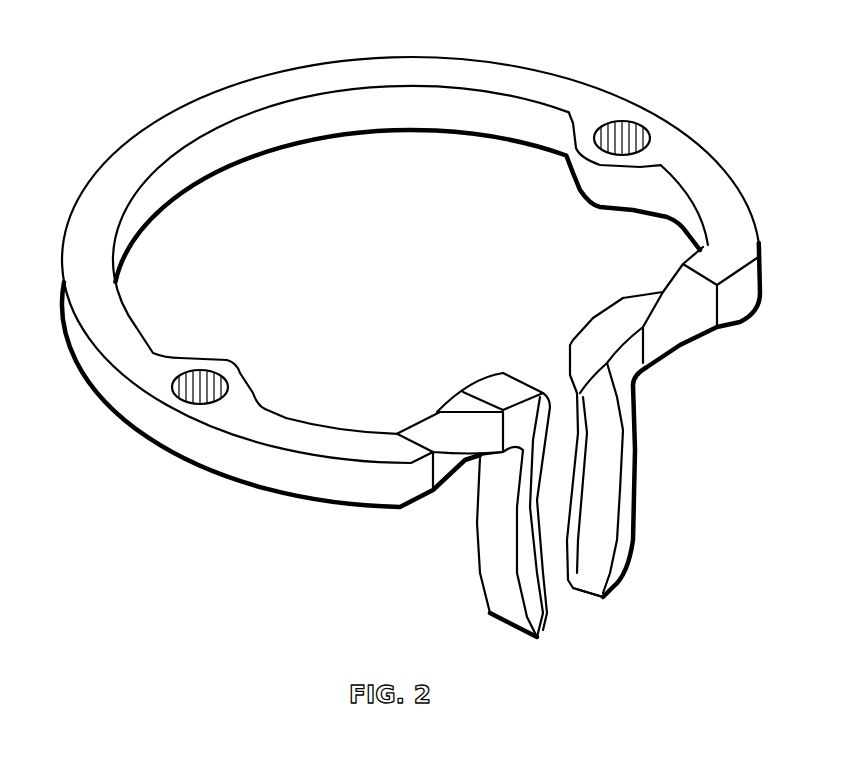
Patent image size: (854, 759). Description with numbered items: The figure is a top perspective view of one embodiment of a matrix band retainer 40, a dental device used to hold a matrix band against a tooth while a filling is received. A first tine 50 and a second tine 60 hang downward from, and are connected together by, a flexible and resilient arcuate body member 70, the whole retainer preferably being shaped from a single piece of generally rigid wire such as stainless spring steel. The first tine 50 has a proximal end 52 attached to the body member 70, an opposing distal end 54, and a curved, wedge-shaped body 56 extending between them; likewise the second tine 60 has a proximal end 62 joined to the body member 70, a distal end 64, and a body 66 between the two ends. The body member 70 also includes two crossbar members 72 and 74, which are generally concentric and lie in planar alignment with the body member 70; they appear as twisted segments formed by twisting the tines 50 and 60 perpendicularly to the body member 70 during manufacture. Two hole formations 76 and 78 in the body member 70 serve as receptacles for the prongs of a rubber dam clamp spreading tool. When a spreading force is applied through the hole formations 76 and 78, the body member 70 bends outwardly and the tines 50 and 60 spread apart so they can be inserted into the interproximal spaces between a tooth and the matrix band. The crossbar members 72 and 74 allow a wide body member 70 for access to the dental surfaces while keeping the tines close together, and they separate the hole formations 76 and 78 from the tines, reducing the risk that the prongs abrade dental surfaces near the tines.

The matrix band retainer 40 is at (553, 61).
The first tine 50 is at (472, 562).
The proximal end of first tine 52 is at (535, 388).
The distal end of first tine 54 is at (530, 643).
The body of first tine 56 is at (490, 520).
The second tine 60 is at (650, 494).
The proximal end of second tine 62 is at (566, 342).
The distal end of second tine 64 is at (600, 604).
The body of second tine 66 is at (622, 430).
The body member 70 is at (150, 147).
The first crossbar member 72 is at (418, 409).
The second crossbar member 74 is at (622, 294).
The first hole formation 76 is at (201, 381).
The second hole formation 78 is at (618, 136).